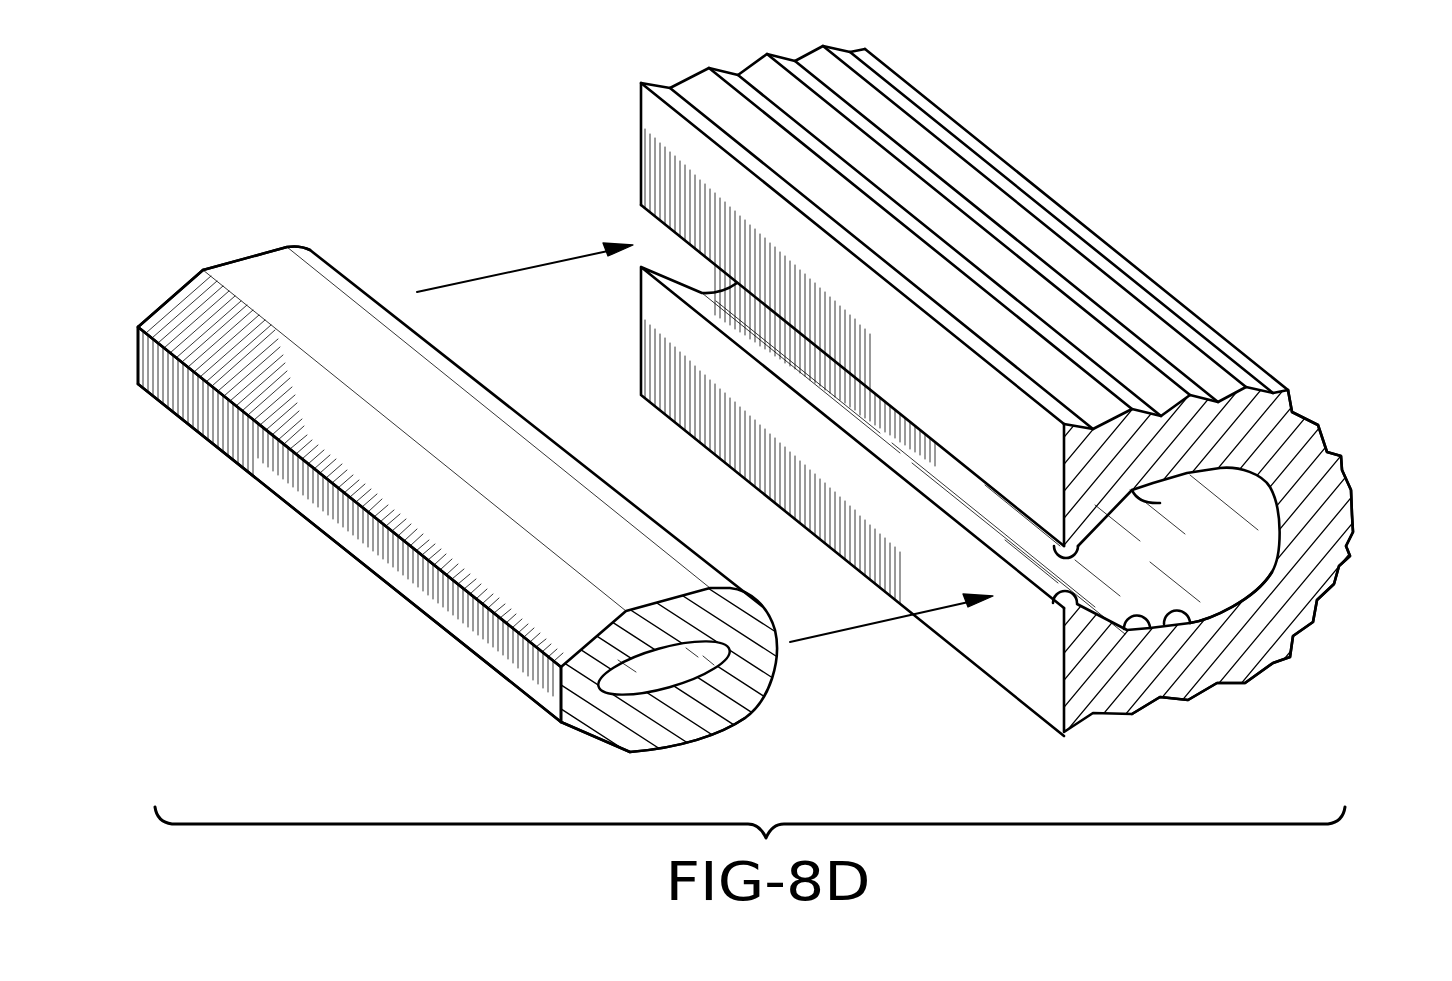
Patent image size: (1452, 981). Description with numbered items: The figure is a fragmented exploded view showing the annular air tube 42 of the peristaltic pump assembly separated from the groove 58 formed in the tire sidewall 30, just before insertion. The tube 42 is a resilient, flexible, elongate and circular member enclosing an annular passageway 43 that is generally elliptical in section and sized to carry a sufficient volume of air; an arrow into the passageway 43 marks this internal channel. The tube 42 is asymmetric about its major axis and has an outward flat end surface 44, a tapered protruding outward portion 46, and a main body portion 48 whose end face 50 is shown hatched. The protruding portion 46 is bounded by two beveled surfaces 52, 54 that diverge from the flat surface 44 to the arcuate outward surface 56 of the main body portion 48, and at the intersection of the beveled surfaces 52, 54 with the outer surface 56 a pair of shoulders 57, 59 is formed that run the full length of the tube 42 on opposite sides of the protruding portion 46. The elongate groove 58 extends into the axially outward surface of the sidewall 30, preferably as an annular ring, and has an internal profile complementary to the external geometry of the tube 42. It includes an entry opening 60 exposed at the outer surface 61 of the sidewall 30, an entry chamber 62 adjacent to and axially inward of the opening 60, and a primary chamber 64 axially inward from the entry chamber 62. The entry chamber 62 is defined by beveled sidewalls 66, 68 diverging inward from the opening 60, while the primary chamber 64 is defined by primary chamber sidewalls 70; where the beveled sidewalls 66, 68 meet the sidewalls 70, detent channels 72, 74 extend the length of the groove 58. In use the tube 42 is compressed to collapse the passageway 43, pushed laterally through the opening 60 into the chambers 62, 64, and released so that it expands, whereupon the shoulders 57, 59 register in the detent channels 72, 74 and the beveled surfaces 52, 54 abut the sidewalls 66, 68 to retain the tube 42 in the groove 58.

The sidewall 30 is at (682, 319).
The annular air tube 42 is at (326, 238).
The annular passageway 43 is at (660, 668).
The outward flat end surface 44 is at (265, 453).
The tapered protruding outward portion 46 is at (164, 298).
The main body portion 48 is at (244, 258).
The end face 50 is at (777, 634).
The beveled surface 52 is at (437, 505).
The beveled surface 54 is at (600, 736).
The arcuate outward surface 56 is at (410, 372).
The shoulder 57 is at (533, 553).
The elongate groove 58 is at (1262, 588).
The shoulder 59 is at (630, 752).
The entry opening 60 is at (1054, 571).
The outer surface 61 is at (783, 437).
The entry chamber 62 is at (1218, 568).
The primary chamber 64 is at (1240, 529).
The beveled sidewall 66 is at (1060, 593).
The beveled sidewall 68 is at (1060, 556).
The primary chamber sidewall 70 is at (1182, 617).
The detent channel 72 is at (1142, 622).
The detent channel 74 is at (1160, 503).